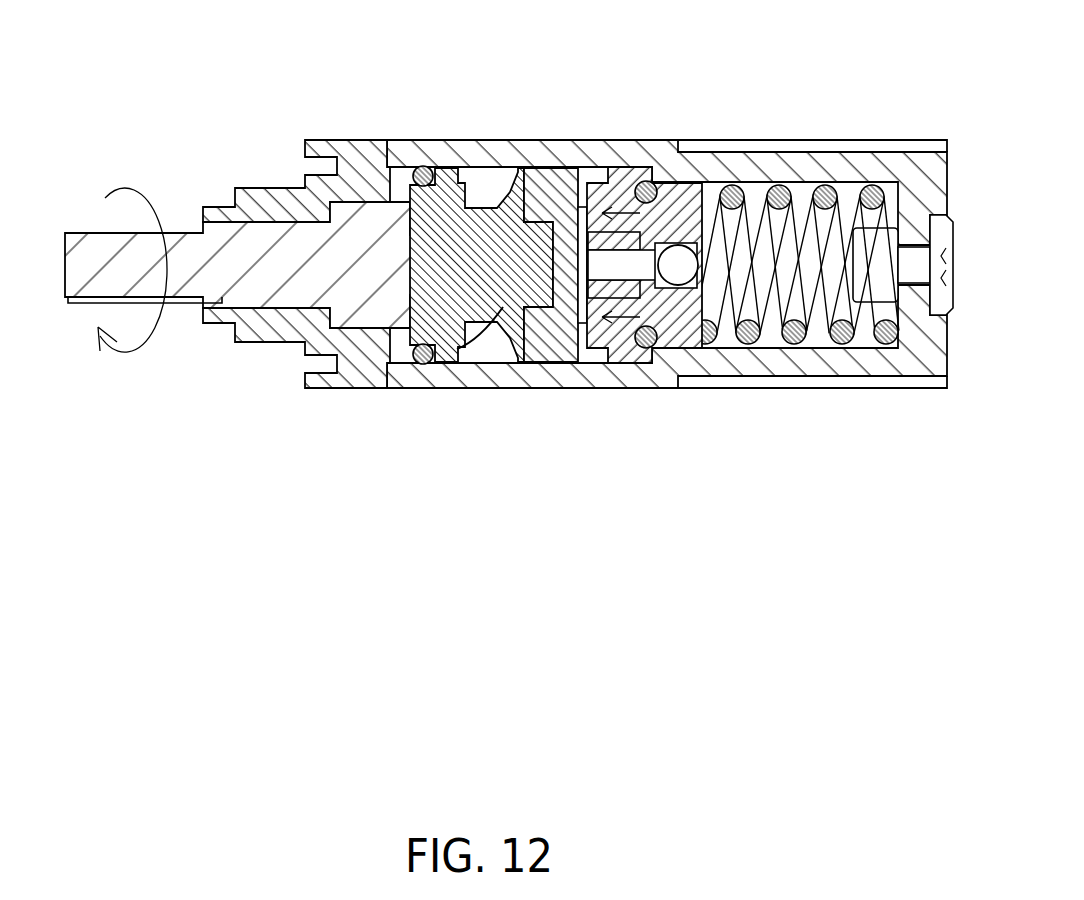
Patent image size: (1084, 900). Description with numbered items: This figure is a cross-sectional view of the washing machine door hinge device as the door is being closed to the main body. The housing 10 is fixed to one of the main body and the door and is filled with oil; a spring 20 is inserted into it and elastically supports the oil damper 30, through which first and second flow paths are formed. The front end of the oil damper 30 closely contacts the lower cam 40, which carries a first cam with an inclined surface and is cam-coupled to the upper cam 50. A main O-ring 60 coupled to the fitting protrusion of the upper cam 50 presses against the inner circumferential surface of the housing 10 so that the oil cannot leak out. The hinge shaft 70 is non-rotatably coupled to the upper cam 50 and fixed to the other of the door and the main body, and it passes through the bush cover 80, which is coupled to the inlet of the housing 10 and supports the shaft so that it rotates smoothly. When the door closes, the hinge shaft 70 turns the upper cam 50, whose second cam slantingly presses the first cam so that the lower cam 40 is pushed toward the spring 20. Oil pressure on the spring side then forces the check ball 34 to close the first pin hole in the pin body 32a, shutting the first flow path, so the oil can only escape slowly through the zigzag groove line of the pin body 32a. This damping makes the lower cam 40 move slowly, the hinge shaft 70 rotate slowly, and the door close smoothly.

The housing 10 is at (528, 139).
The spring 20 is at (828, 182).
The oil damper 30 is at (612, 180).
The pin body 32a is at (632, 259).
The check ball 34 is at (681, 244).
The lower cam 40 is at (557, 333).
The upper cam 50 is at (503, 264).
The main O-ring 60 is at (423, 164).
The hinge shaft 70 is at (86, 245).
The bush cover 80 is at (349, 141).